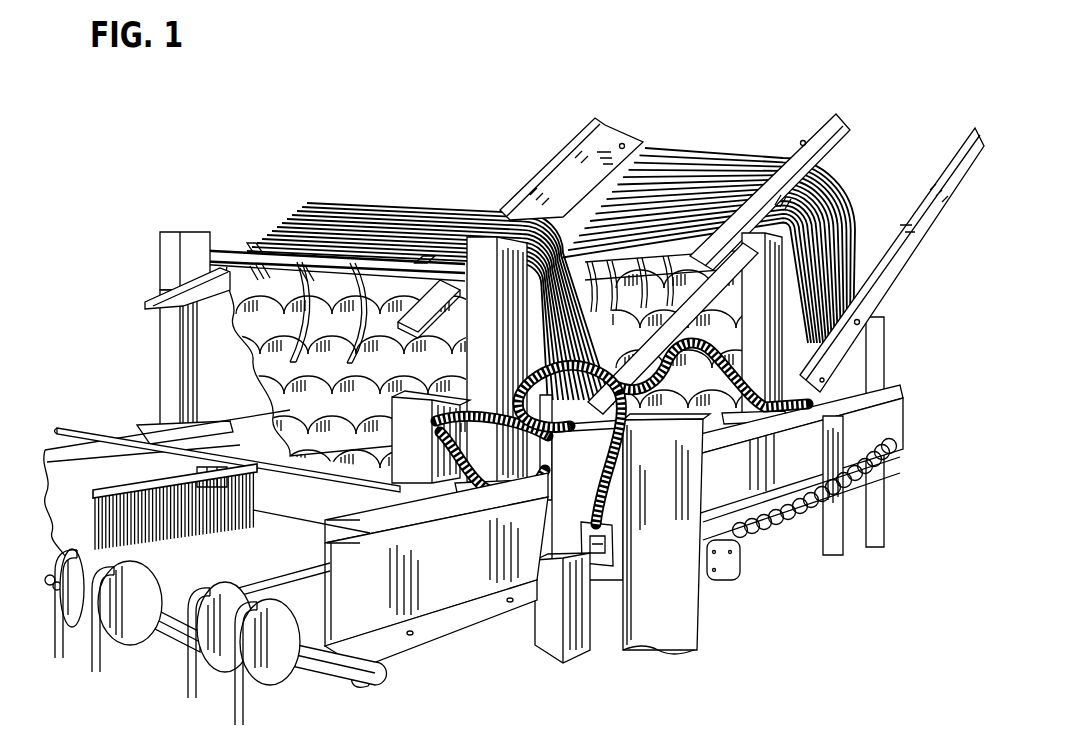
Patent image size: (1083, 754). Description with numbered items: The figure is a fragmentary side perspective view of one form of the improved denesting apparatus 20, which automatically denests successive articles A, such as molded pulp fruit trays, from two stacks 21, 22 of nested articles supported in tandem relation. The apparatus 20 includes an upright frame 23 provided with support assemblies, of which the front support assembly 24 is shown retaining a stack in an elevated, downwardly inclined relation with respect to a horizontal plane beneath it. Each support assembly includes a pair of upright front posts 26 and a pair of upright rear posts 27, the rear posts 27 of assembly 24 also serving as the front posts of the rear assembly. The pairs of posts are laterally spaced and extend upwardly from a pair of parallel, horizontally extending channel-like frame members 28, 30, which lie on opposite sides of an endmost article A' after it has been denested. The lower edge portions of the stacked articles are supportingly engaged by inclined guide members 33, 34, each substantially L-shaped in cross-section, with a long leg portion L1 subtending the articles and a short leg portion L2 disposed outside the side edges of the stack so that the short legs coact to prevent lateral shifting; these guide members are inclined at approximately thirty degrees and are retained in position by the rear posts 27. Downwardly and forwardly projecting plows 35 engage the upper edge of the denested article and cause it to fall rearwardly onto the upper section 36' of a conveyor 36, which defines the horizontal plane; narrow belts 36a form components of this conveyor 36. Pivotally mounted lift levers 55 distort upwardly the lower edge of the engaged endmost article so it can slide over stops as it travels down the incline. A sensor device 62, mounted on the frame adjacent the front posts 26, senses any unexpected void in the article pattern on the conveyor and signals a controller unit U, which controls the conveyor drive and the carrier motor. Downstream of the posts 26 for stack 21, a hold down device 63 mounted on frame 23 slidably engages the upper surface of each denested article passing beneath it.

The apparatus 20 is at (442, 152).
The stack 21 is at (403, 198).
The stack 22 is at (697, 150).
The upright frame 23 is at (790, 603).
The support assembly 24 is at (232, 252).
The front posts 26 is at (172, 237).
The rear posts 27 is at (752, 293).
The channel-like frame member 28 is at (455, 566).
The channel-like frame member 30 is at (104, 478).
The inclined guide member 33 is at (817, 126).
The inclined guide member 34 is at (538, 157).
The plows 35 is at (347, 266).
The conveyor 36 is at (216, 662).
The narrow belts 36a is at (90, 662).
The upper section of conveyor 36' is at (289, 584).
The lift levers 55 is at (744, 743).
The sensor device 62 is at (424, 449).
The hold down device 63 is at (228, 548).
The articles A is at (592, 179).
The endmost article A' is at (498, 367).
The long leg portion L1 is at (612, 150).
The short leg portion L2 is at (580, 128).
The controller unit U is at (667, 537).